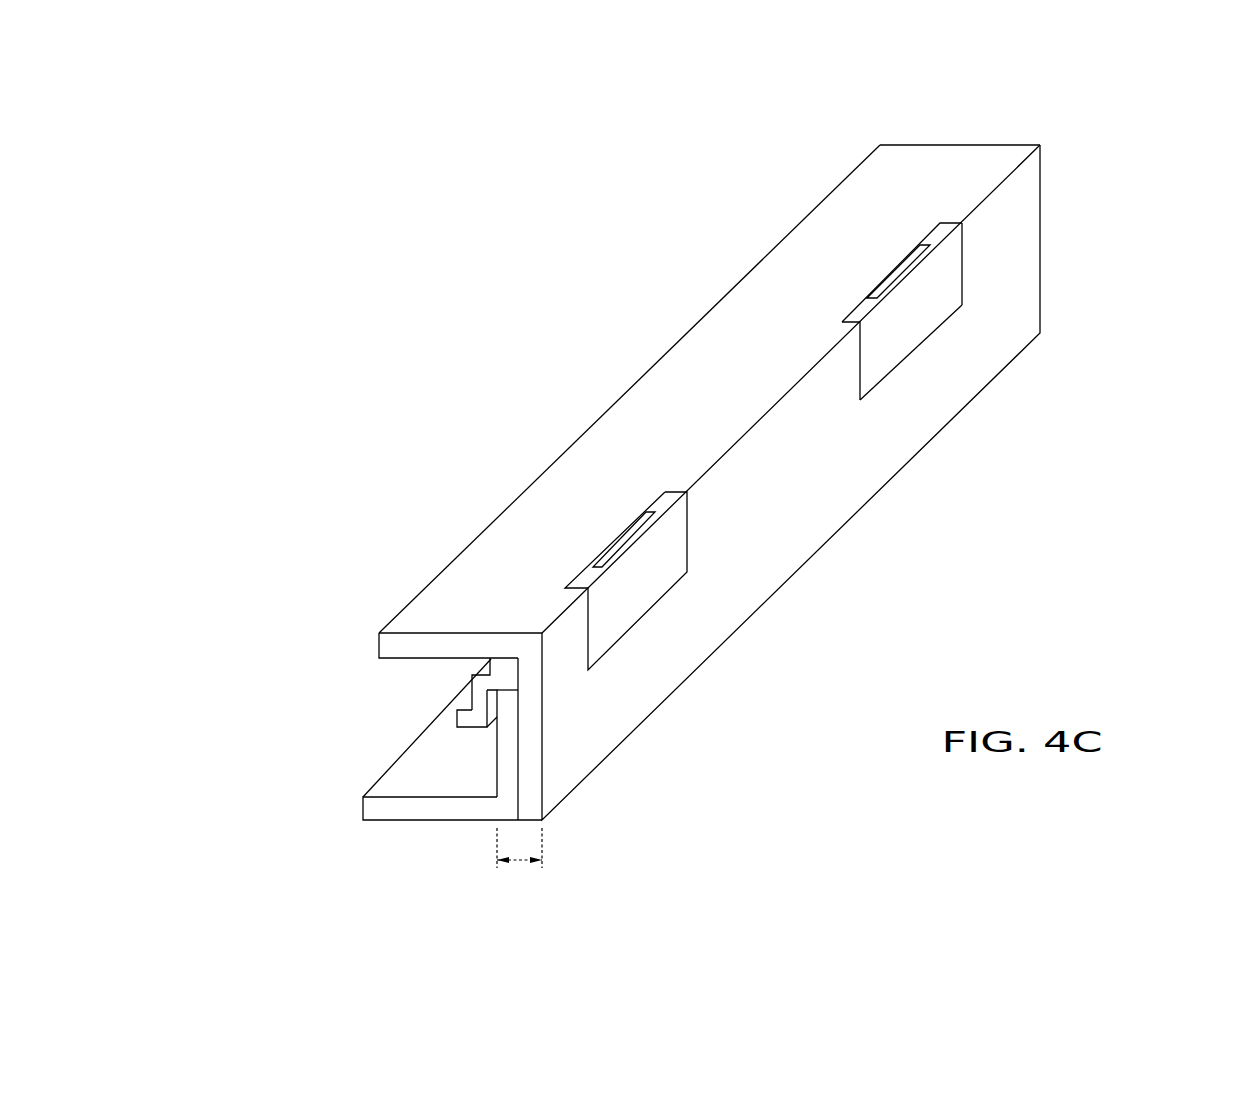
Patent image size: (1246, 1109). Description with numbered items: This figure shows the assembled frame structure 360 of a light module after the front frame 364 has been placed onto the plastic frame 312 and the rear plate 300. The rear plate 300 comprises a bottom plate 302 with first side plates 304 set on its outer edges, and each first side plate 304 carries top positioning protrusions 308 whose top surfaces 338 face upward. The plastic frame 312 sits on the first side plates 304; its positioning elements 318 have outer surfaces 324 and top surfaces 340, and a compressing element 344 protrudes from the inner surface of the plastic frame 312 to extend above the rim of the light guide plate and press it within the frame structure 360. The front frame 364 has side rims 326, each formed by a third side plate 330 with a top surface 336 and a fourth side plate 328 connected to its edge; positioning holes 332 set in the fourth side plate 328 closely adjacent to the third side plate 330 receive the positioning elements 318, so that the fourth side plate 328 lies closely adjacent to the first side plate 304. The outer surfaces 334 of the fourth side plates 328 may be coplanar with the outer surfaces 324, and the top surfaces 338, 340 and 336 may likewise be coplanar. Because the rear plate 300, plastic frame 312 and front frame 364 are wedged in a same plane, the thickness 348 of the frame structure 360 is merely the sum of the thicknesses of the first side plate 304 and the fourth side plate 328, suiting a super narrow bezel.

The frame structure 360 is at (527, 205).
The front frame 364 is at (903, 138).
The third side plate 330 is at (933, 157).
The side rim 326 is at (1155, 110).
The fourth side plate 328 is at (1020, 205).
The top surface of third side plate 336 is at (870, 197).
The top positioning protrusion 308 is at (880, 272).
The positioning element 318 is at (963, 260).
The outer surface of positioning element 324 is at (935, 320).
The outer surface of fourth side plate 334 is at (940, 390).
The positioning hole 332 is at (855, 368).
The top surface of positioning element 340 is at (660, 497).
The top surface of top positioning protrusion 338 is at (618, 532).
The plastic frame 312 is at (460, 667).
The compressing element 344 is at (475, 692).
The first side plate 304 is at (508, 755).
The rear plate 300 is at (218, 775).
The bottom plate 302 is at (428, 808).
The thickness of frame structure 348 is at (518, 870).